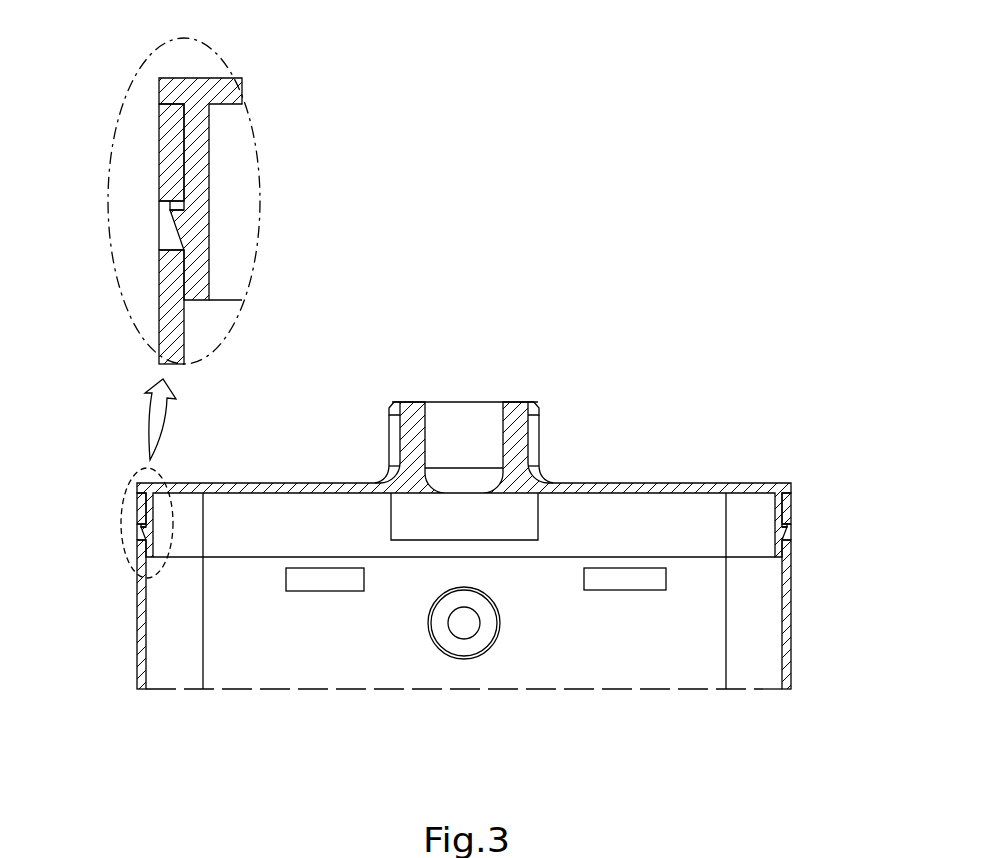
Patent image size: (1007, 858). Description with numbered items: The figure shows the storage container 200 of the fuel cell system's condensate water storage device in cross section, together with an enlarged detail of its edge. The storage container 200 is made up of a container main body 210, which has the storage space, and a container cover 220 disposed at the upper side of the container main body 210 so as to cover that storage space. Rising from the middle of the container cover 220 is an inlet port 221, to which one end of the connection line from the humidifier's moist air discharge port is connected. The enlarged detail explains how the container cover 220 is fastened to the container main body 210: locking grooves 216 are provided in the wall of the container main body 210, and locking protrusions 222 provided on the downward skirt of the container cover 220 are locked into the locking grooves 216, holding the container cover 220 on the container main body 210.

The storage container 200 is at (863, 478).
The container main body 210 is at (173, 145).
The locking grooves 216 is at (174, 241).
The container cover 220 is at (208, 87).
The inlet port 221 is at (501, 425).
The locking protrusions 222 is at (183, 211).